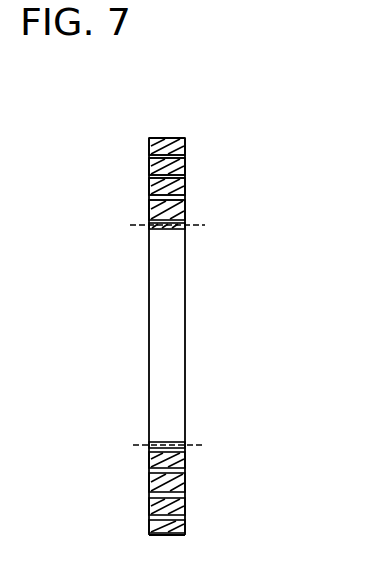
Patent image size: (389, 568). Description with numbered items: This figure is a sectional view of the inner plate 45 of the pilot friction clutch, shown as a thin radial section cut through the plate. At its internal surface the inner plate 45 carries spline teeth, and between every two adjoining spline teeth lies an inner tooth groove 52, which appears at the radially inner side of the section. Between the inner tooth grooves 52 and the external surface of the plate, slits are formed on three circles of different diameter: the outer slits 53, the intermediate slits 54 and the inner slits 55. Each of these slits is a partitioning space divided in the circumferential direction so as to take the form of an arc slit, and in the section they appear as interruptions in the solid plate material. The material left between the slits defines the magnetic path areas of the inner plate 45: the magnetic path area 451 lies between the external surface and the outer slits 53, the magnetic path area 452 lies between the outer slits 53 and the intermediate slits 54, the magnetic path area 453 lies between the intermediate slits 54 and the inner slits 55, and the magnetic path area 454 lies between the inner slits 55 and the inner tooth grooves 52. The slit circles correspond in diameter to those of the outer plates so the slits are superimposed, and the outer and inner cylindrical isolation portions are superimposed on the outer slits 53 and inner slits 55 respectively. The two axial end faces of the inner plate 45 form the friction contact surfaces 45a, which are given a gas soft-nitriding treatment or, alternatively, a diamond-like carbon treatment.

The inner plate 45 is at (176, 138).
The magnetic path area 451 is at (150, 144).
The magnetic path area 452 is at (150, 160).
The magnetic path area 453 is at (153, 185).
The magnetic path area 454 is at (150, 210).
The inner tooth groove 52 is at (166, 229).
The outer slit 53 is at (187, 153).
The intermediate slit 54 is at (187, 177).
The inner slit 55 is at (188, 198).
The friction contact surface 45a is at (149, 458).